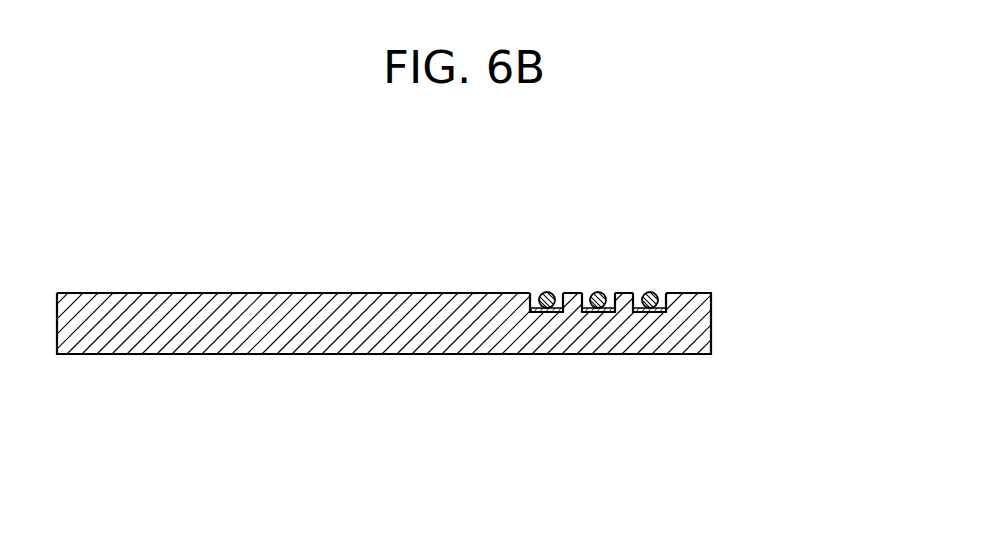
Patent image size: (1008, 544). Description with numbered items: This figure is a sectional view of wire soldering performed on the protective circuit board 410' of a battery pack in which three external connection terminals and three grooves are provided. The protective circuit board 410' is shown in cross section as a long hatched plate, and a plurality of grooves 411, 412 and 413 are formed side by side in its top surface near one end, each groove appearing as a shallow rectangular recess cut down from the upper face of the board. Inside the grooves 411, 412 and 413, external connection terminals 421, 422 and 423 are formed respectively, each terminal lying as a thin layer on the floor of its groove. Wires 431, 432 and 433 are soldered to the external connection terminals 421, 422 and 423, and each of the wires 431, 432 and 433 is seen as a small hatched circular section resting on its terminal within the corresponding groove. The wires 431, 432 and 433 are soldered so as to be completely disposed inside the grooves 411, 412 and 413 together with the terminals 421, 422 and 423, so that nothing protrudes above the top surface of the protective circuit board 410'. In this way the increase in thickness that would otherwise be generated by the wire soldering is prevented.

The protective circuit board 410' is at (437, 319).
The groove 411 is at (536, 280).
The groove 412 is at (586, 280).
The groove 413 is at (641, 280).
The external connection terminal 421 is at (560, 315).
The external connection terminal 422 is at (613, 313).
The external connection terminal 423 is at (667, 313).
The wire 431 is at (547, 291).
The wire 432 is at (602, 291).
The wire 433 is at (653, 291).